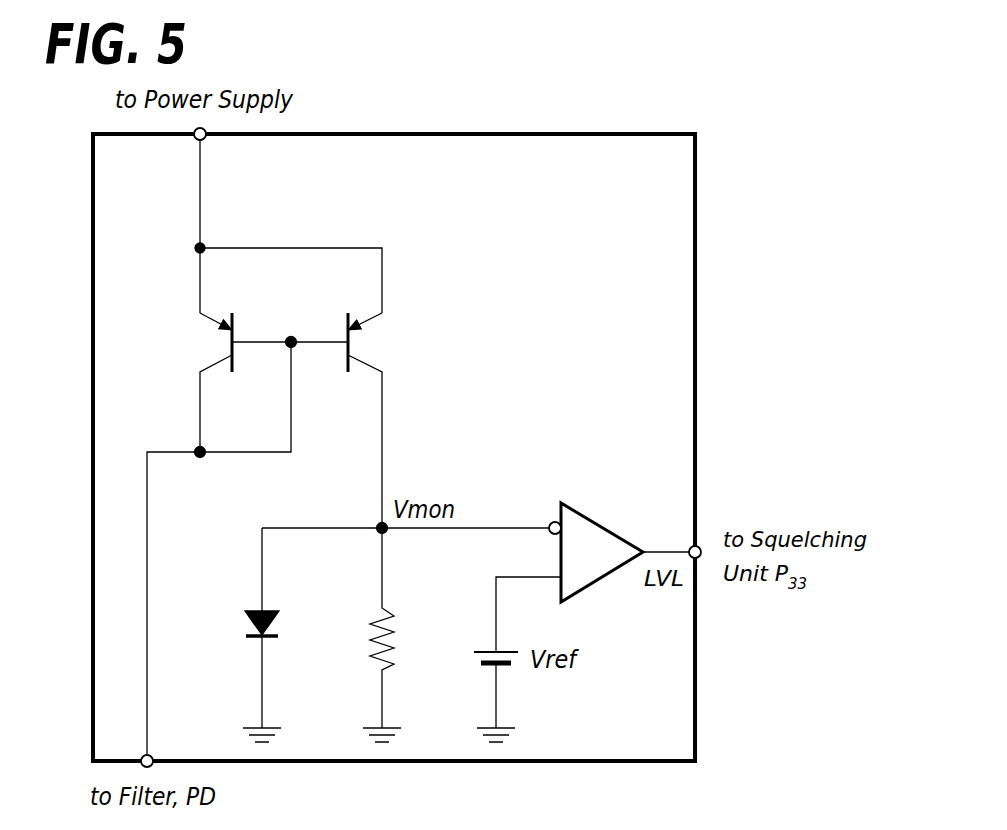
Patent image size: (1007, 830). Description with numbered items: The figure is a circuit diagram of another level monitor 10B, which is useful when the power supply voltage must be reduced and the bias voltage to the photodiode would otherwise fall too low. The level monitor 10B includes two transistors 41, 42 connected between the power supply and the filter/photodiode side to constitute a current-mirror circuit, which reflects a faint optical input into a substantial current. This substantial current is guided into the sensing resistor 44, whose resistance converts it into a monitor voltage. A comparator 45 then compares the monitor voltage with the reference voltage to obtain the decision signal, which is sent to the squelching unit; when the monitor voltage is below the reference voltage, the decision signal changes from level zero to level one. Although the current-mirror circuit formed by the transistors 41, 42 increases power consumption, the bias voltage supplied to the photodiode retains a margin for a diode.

The level monitor 10B is at (697, 165).
The transistor 41 is at (233, 320).
The transistor 42 is at (347, 320).
The sensing resistor 44 is at (388, 625).
The comparator 45 is at (592, 519).